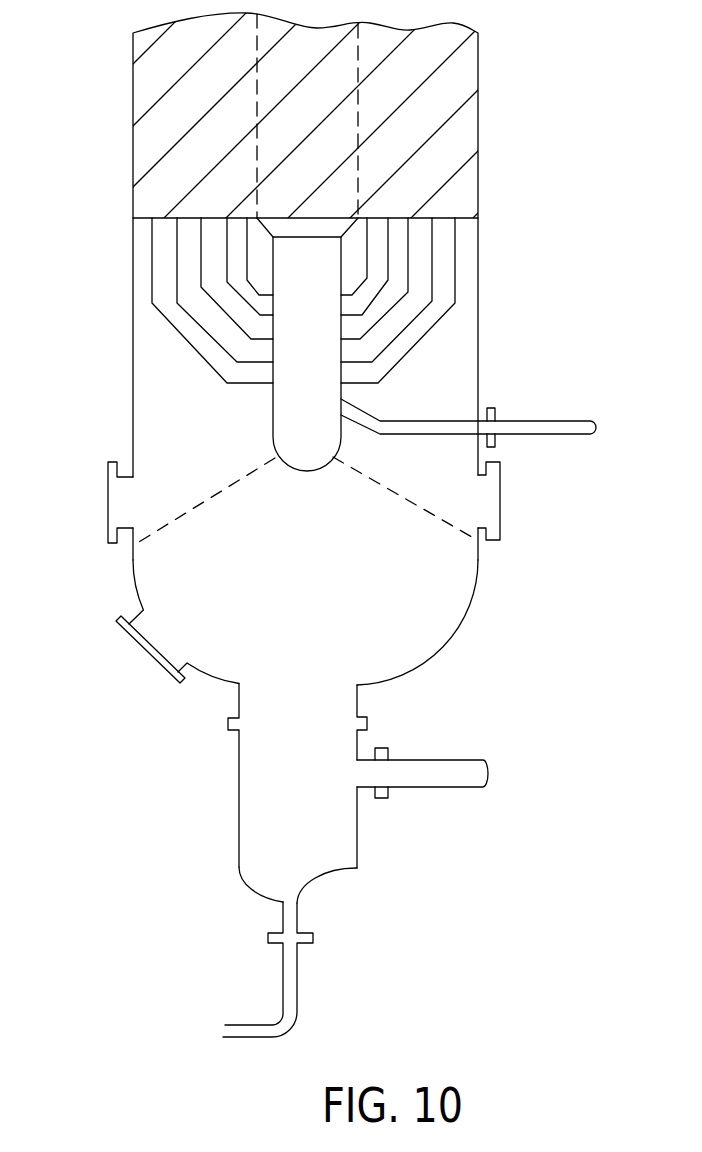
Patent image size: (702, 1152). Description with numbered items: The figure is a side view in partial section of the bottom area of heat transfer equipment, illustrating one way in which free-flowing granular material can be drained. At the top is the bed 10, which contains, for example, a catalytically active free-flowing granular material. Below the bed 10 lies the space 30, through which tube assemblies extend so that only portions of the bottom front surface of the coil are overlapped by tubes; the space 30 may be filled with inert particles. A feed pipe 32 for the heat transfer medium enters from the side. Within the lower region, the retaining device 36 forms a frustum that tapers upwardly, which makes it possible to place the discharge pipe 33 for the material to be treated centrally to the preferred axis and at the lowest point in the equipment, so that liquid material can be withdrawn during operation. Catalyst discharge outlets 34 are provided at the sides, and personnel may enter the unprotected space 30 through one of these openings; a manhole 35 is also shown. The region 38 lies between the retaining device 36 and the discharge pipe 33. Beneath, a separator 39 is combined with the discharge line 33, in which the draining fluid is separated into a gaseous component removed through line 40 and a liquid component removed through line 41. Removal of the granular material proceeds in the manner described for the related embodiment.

The bed 10 is at (323, 141).
The space 30 is at (215, 434).
The feed pipe 32 is at (553, 421).
The discharge pipe 33 is at (292, 707).
The catalyst discharge outlet 34 is at (126, 496).
The manhole 35 is at (153, 637).
The retaining device 36 is at (222, 491).
The rounded vessel 38 is at (325, 616).
The separator 39 is at (332, 827).
The line 40 is at (408, 773).
The line 41 is at (293, 1000).